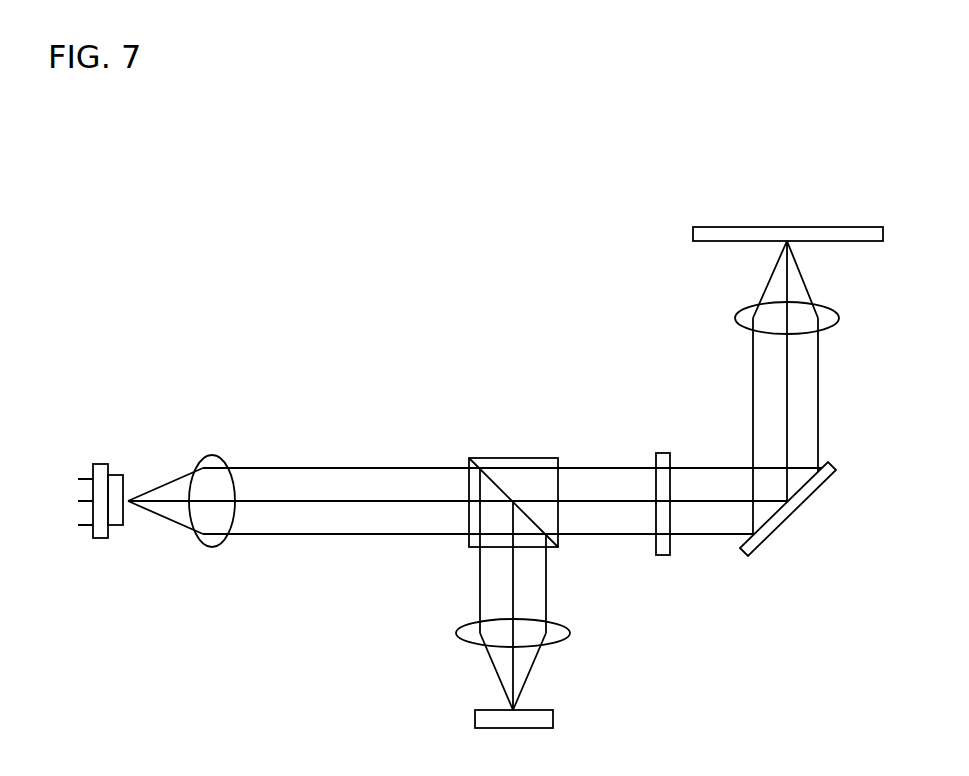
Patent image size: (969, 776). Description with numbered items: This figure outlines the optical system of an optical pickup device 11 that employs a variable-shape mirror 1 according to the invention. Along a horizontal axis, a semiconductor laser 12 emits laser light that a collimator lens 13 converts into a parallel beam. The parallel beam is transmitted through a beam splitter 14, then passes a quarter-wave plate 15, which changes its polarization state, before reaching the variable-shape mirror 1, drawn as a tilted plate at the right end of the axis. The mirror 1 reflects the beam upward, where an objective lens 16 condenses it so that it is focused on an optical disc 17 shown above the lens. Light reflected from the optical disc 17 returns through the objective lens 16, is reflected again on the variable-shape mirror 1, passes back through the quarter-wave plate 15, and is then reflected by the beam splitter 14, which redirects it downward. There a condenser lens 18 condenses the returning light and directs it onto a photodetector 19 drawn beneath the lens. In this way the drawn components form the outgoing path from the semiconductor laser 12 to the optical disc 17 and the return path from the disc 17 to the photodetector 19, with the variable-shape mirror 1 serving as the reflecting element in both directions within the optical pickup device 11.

The variable-shape mirror 1 is at (782, 525).
The optical pickup device 11 is at (403, 302).
The semiconductor laser 12 is at (102, 538).
The collimator lens 13 is at (213, 548).
The beam splitter 14 is at (507, 457).
The quarter-wave plate 15 is at (668, 452).
The objective lens 16 is at (735, 317).
The optical disc 17 is at (705, 230).
The condenser lens 18 is at (573, 631).
The photodetector 19 is at (553, 719).